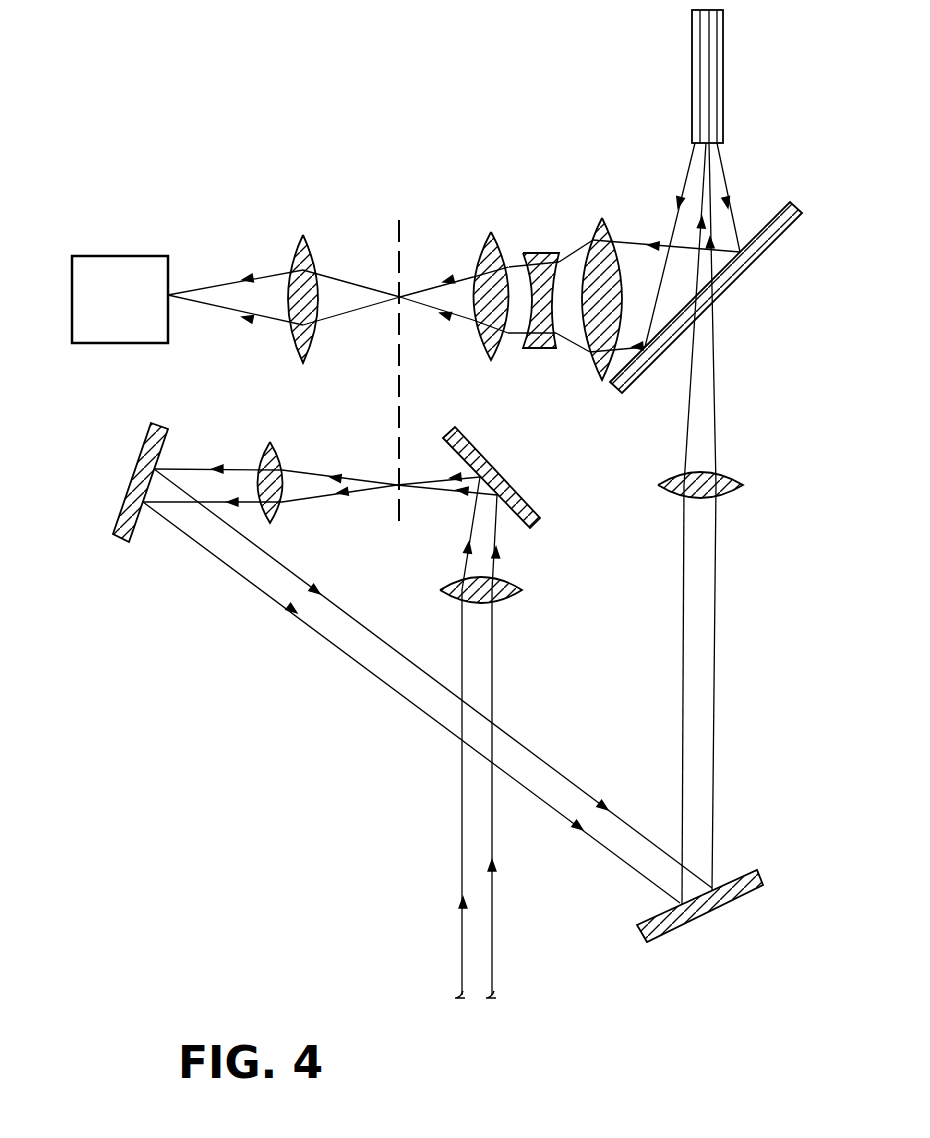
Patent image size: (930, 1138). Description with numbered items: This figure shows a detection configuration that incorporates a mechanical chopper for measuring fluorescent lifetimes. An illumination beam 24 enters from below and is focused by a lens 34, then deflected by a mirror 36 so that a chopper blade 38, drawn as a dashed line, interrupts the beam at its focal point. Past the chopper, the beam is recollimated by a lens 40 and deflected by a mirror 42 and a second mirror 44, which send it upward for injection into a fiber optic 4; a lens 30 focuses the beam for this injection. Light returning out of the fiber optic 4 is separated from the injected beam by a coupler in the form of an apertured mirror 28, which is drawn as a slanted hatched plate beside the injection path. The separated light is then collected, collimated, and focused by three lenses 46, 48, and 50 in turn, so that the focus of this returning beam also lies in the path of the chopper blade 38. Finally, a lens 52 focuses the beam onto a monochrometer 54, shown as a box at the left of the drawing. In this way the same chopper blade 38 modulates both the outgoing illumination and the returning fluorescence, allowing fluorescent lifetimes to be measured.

The fiber optic 4 is at (725, 48).
The illumination beam 24 is at (492, 910).
The apertured mirror 28 is at (760, 250).
The lens 30 is at (720, 478).
The lens 34 is at (507, 583).
The mirror 36 is at (487, 463).
The chopper blade 38 is at (393, 423).
The lens 40 is at (263, 443).
The mirror 42 is at (142, 452).
The mirror 44 is at (713, 905).
The lens 46 is at (607, 220).
The lens 48 is at (543, 252).
The lens 50 is at (490, 232).
The lens 52 is at (302, 238).
The monochrometer 54 is at (120, 299).